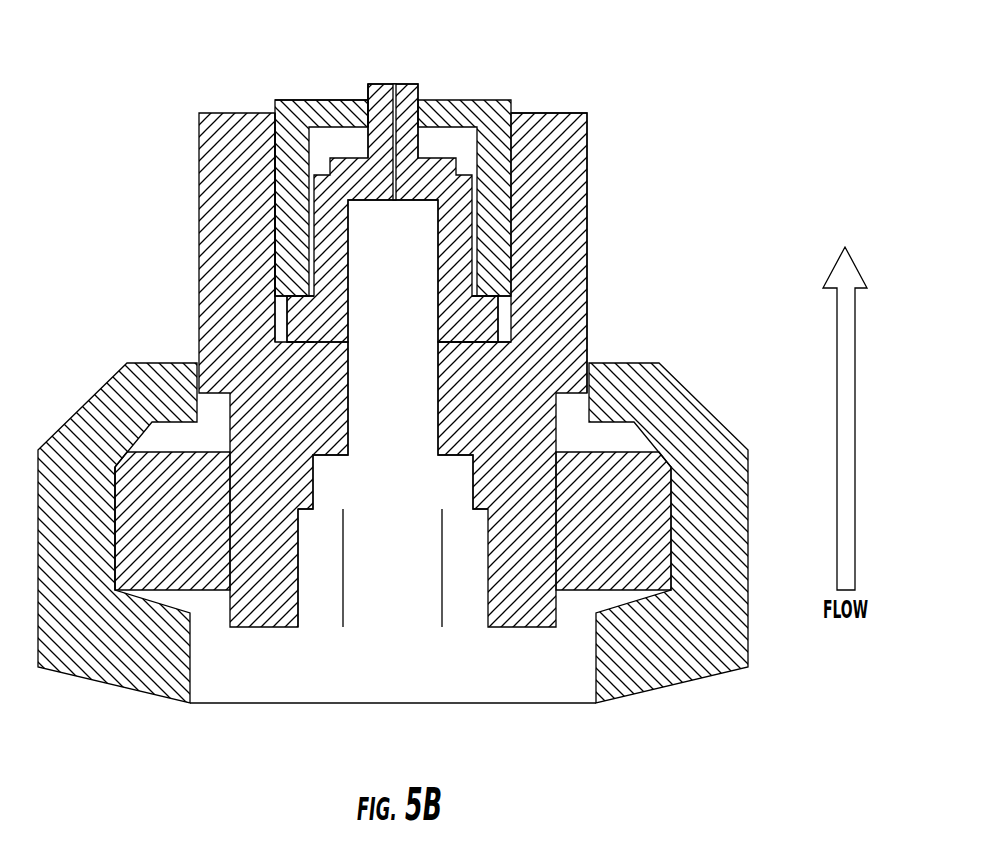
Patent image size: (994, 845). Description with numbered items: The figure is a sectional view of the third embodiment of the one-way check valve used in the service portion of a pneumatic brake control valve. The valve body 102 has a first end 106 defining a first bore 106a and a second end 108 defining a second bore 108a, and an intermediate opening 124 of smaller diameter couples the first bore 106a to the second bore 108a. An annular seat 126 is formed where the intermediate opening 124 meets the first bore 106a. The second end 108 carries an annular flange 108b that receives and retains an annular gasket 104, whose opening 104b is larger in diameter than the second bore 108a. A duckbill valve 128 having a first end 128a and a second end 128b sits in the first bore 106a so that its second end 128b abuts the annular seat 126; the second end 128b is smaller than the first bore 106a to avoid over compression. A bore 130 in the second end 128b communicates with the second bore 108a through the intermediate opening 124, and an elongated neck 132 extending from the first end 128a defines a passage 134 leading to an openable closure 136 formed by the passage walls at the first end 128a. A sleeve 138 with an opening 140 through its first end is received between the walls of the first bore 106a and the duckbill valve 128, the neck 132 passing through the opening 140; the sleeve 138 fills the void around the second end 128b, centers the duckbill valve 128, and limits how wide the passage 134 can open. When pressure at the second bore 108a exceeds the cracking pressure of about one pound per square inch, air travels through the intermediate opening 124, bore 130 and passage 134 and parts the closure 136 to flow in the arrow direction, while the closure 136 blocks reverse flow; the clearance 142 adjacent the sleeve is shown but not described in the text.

The valve body 102 is at (587, 205).
The annular gasket 104 is at (687, 662).
The opening 104b is at (565, 688).
The first end 106 is at (560, 112).
The first bore 106a is at (273, 147).
The second end 108 is at (653, 500).
The second bore 108a is at (298, 597).
The annular flange 108b is at (130, 570).
The intermediate opening 124 is at (348, 422).
The annular seat 126 is at (480, 310).
The duckbill valve 128 is at (353, 172).
The first end 128a is at (382, 99).
The second end 128b is at (302, 315).
The bore 130 is at (367, 254).
The elongated neck 132 is at (415, 102).
The passage 134 is at (410, 157).
The openable closure 136 is at (395, 82).
The sleeve 138 is at (292, 140).
The opening 140 is at (367, 99).
The clearance gap 142 is at (503, 310).